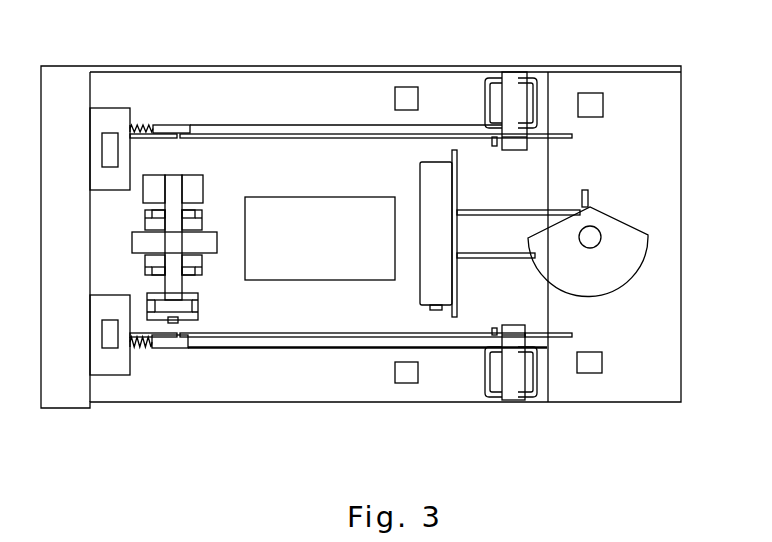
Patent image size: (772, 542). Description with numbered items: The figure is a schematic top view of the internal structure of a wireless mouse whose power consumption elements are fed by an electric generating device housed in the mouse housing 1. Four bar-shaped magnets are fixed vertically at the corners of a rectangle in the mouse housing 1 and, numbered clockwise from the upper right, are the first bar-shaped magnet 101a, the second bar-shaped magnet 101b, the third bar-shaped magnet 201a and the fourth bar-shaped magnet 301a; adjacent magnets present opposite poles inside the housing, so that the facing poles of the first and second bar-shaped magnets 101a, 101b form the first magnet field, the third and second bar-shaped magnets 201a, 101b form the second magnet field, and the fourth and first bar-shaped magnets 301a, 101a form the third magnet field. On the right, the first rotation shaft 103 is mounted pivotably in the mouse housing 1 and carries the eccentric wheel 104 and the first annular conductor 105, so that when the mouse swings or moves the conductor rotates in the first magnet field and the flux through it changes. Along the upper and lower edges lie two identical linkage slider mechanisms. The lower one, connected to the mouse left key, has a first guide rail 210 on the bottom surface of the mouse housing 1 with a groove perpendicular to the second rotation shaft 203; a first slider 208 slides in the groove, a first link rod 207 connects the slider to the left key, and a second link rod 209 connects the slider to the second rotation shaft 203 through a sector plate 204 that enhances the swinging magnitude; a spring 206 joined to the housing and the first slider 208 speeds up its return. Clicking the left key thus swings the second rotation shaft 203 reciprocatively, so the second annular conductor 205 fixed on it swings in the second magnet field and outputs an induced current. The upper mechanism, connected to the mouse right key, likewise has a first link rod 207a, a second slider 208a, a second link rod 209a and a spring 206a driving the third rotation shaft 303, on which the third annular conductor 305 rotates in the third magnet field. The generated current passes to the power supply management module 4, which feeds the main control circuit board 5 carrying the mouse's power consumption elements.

The mouse housing 1 is at (225, 70).
The power supply management module 4 is at (433, 278).
The main control circuit board 5 is at (312, 257).
The first bar-shaped magnet 101a is at (590, 107).
The second bar-shaped magnet 101b is at (592, 367).
The first rotation shaft 103 is at (590, 237).
The eccentric wheel 104 is at (612, 262).
The first annular conductor 105 is at (588, 200).
The third bar-shaped magnet 201a is at (410, 375).
The second rotation shaft 203 is at (515, 377).
The sector plate 204 is at (563, 338).
The second annular conductor 205 is at (535, 367).
The spring 206 is at (130, 347).
The spring 206a is at (137, 125).
The first link rod 207 is at (165, 333).
The first link rod 207a is at (150, 138).
The first slider 208 is at (168, 342).
The second slider 208a is at (172, 128).
The second link rod 209 is at (233, 333).
The second link rod 209a is at (258, 138).
The first guide rail 210 is at (275, 338).
The fourth bar-shaped magnet 301a is at (410, 100).
The third rotation shaft 303 is at (507, 98).
The third annular conductor 305 is at (537, 97).